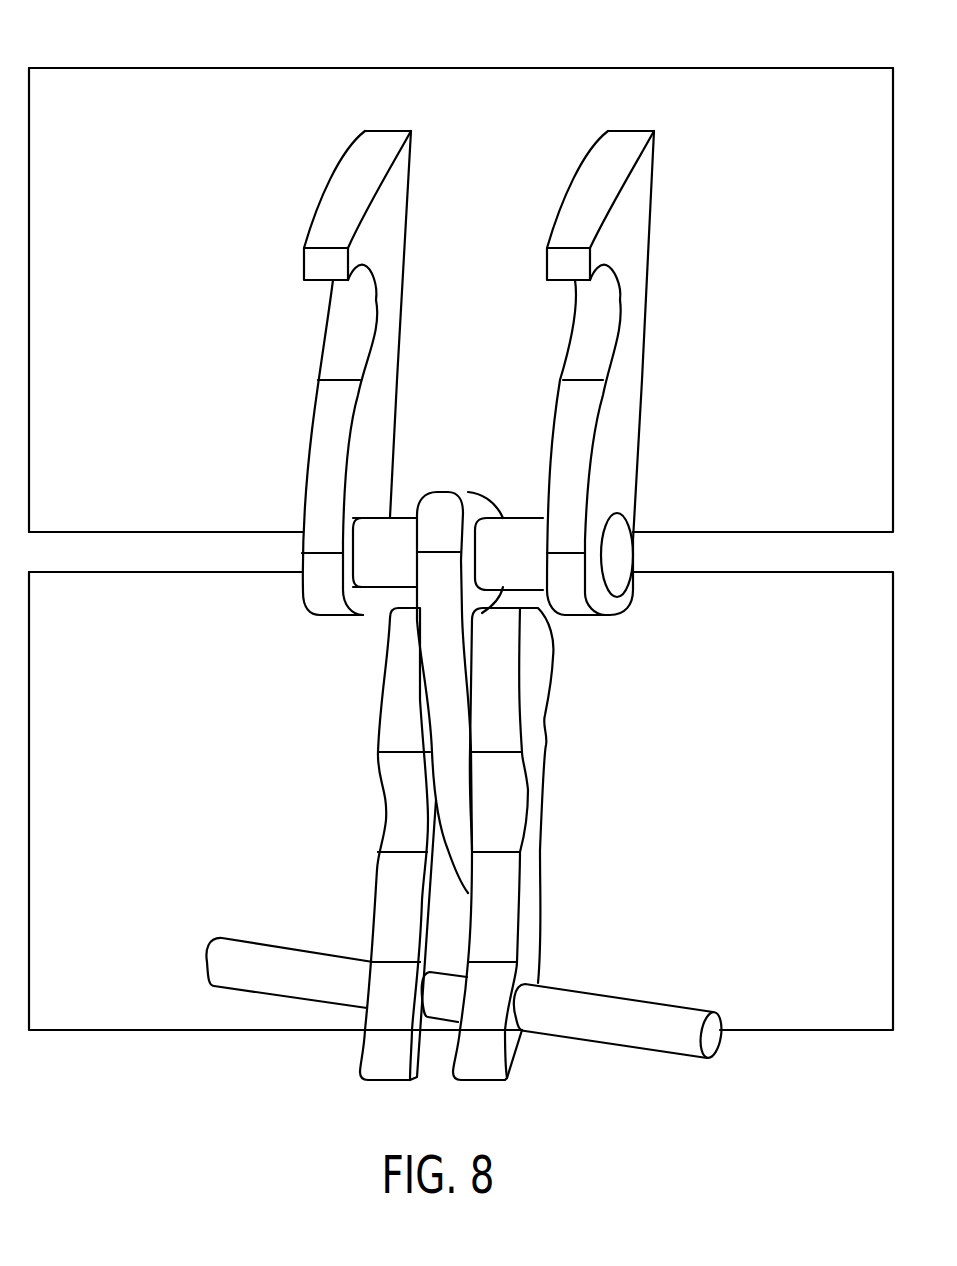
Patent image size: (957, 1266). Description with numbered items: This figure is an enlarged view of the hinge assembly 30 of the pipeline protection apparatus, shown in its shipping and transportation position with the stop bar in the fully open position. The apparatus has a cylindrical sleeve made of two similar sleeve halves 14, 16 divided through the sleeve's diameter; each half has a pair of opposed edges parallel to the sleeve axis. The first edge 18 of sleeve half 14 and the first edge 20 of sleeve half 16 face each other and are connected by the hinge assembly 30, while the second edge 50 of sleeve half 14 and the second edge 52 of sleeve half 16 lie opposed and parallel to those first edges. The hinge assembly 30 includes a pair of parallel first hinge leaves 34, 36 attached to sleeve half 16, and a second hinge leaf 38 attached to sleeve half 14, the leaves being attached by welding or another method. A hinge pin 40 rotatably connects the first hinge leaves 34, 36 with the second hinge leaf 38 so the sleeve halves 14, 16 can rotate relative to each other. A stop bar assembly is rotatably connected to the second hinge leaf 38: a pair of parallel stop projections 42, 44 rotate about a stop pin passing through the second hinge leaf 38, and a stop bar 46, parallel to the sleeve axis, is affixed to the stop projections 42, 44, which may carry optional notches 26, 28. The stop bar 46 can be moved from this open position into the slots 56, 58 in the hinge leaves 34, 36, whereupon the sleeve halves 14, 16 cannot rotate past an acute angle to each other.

The sleeve half 14 is at (158, 945).
The sleeve half 16 is at (143, 153).
The first edge 18 is at (82, 574).
The first edge 20 is at (90, 528).
The notch 26 is at (388, 796).
The notch 28 is at (519, 803).
The hinge assembly 30 is at (743, 348).
The first hinge leaf 34 is at (339, 373).
The first hinge leaf 36 is at (620, 373).
The second hinge leaf 38 is at (448, 647).
The hinge pin 40 is at (507, 563).
The stop projection 42 is at (384, 875).
The stop projection 44 is at (502, 917).
The stop bar 46 is at (668, 1036).
The second edge 50 is at (227, 1032).
The second edge 52 is at (317, 65).
The slot 56 is at (343, 318).
The slot 58 is at (595, 318).